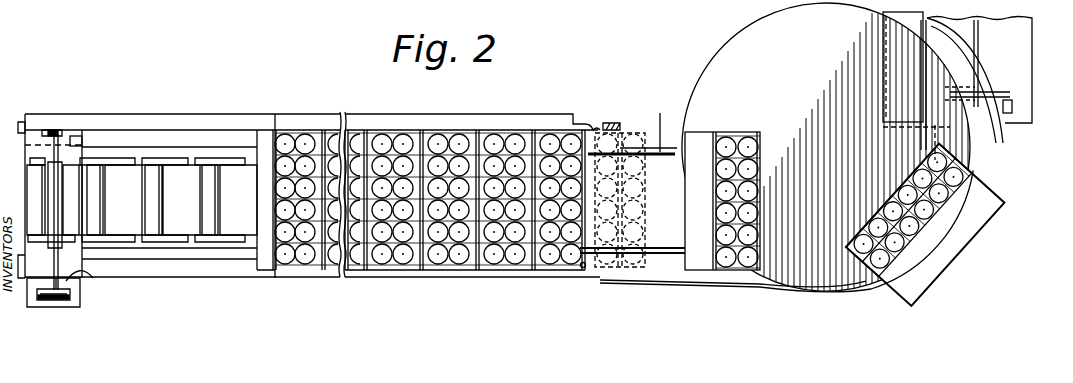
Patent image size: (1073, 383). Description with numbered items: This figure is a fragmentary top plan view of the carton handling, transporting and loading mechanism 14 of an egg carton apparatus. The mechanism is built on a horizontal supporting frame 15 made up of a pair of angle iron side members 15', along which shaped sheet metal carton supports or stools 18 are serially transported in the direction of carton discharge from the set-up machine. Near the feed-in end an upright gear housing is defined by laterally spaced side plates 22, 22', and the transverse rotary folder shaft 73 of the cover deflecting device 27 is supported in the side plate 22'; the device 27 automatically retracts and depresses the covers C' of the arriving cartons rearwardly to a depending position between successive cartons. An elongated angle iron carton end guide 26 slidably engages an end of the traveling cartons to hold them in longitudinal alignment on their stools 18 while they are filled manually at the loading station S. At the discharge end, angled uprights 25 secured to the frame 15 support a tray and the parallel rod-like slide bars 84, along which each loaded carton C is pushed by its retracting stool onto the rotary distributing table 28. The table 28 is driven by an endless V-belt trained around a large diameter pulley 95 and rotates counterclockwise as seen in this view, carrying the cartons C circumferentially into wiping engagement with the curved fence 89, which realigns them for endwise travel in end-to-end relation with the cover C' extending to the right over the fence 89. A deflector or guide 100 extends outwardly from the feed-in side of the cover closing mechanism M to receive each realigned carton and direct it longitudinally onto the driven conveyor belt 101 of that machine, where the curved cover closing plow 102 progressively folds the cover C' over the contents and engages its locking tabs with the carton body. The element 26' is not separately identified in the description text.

The carton handling, transporting and loading mechanism 14 is at (449, 289).
The horizontal supporting frame 15 is at (335, 192).
The angle iron side members 15' is at (157, 116).
The carton supports or stools 18 is at (178, 225).
The gear housing side plate 22 is at (53, 307).
The gear housing side plate 22' is at (92, 290).
The angled uprights 25 is at (626, 124).
The carton end guide 26 is at (465, 110).
The guide rail end 26' is at (591, 109).
The cover deflecting device 27 is at (72, 136).
The rotary distributing table 28 is at (712, 68).
The rotary folder shaft 73 is at (43, 128).
The slide bars 84 is at (683, 293).
The curved fence 89 is at (820, 292).
The large diameter pulley 95 is at (583, 268).
The deflector or guide 100 is at (921, 145).
The driven conveyor belt 101 is at (953, 77).
The curved cover closing plow 102 is at (972, 50).
The carton body C is at (583, 179).
The carton cover C' is at (849, 199).
The loading station S is at (232, 111).
The cover closing mechanism M is at (1012, 140).